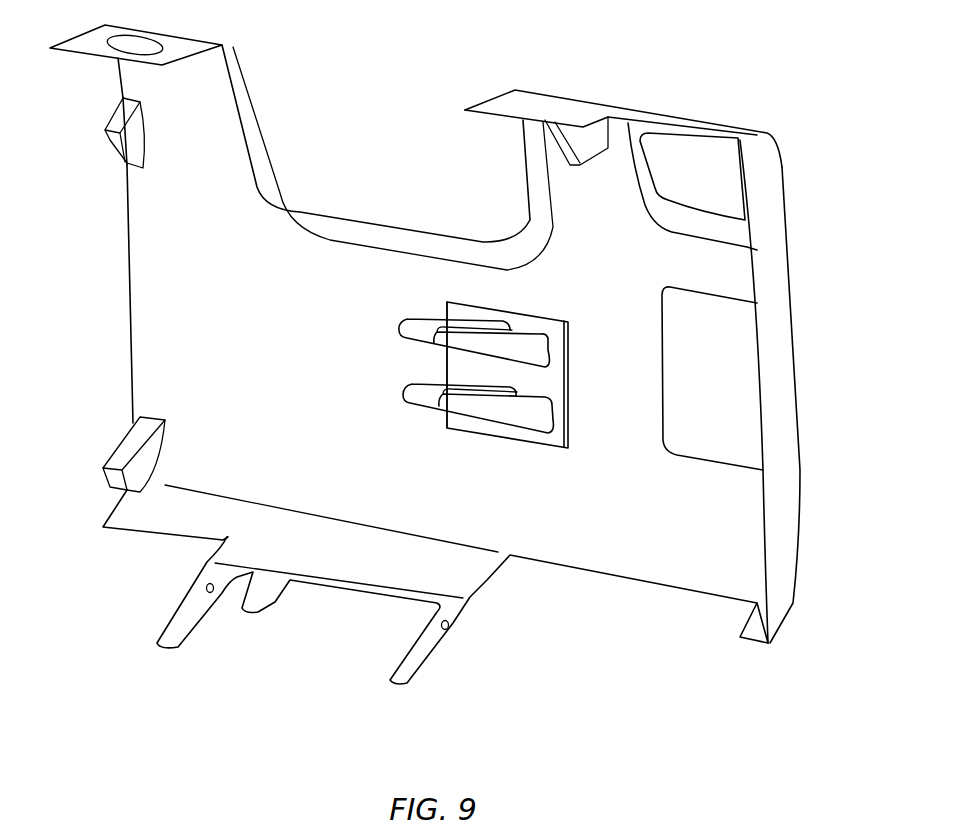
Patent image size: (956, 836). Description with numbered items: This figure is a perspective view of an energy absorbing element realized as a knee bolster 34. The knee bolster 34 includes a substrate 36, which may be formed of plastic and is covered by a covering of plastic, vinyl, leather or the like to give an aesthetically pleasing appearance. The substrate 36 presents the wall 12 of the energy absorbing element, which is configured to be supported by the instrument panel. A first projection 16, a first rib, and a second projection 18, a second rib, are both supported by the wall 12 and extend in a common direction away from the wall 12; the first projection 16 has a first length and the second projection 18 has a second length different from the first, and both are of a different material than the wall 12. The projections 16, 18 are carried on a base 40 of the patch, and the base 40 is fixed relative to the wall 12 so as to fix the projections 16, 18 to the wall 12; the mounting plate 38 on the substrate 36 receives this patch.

The wall 12 is at (257, 247).
The first projection 16 is at (455, 340).
The second projection 18 is at (455, 405).
The knee bolster 34 is at (743, 84).
The substrate 36 is at (227, 334).
The connector mounting plate 38 is at (500, 303).
The base 40 is at (552, 328).